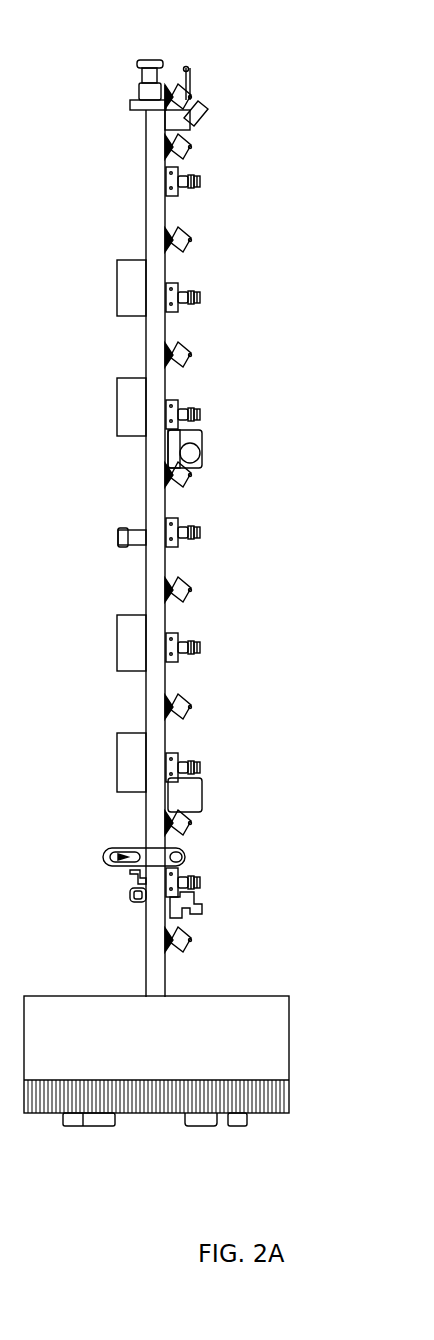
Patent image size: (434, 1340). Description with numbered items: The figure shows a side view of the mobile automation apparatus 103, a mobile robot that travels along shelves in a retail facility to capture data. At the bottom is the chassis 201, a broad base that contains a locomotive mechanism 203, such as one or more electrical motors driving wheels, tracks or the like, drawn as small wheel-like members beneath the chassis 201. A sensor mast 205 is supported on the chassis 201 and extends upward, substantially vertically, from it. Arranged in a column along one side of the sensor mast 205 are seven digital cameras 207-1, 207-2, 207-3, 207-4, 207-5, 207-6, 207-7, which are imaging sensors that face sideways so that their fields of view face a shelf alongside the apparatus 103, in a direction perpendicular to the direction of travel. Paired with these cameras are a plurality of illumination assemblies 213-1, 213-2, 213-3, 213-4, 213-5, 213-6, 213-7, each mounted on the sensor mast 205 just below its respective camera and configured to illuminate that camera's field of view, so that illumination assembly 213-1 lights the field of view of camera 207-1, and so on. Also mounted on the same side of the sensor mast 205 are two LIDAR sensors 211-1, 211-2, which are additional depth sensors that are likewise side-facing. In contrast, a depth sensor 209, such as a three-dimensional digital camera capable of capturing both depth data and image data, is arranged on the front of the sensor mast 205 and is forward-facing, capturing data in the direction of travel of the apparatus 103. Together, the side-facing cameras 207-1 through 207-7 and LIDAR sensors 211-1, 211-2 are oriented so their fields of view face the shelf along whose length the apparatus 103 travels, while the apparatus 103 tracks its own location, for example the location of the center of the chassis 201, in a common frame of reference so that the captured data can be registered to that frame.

The mobile automation apparatus 103 is at (284, 46).
The chassis 201 is at (286, 1100).
The locomotive mechanism 203 is at (197, 1128).
The sensor mast 205 is at (156, 160).
The digital camera 207-1 is at (200, 181).
The digital camera 207-2 is at (200, 297).
The digital camera 207-3 is at (200, 414).
The digital camera 207-4 is at (200, 532).
The digital camera 207-5 is at (200, 647).
The digital camera 207-6 is at (200, 767).
The digital camera 207-7 is at (200, 882).
The depth sensor 209 is at (110, 860).
The LIDAR sensor 211-1 is at (203, 440).
The LIDAR sensor 211-2 is at (203, 785).
The illumination assembly 213-1 is at (192, 243).
The illumination assembly 213-2 is at (192, 358).
The illumination assembly 213-3 is at (192, 477).
The illumination assembly 213-4 is at (192, 593).
The illumination assembly 213-5 is at (192, 709).
The illumination assembly 213-6 is at (192, 825).
The illumination assembly 213-7 is at (192, 942).